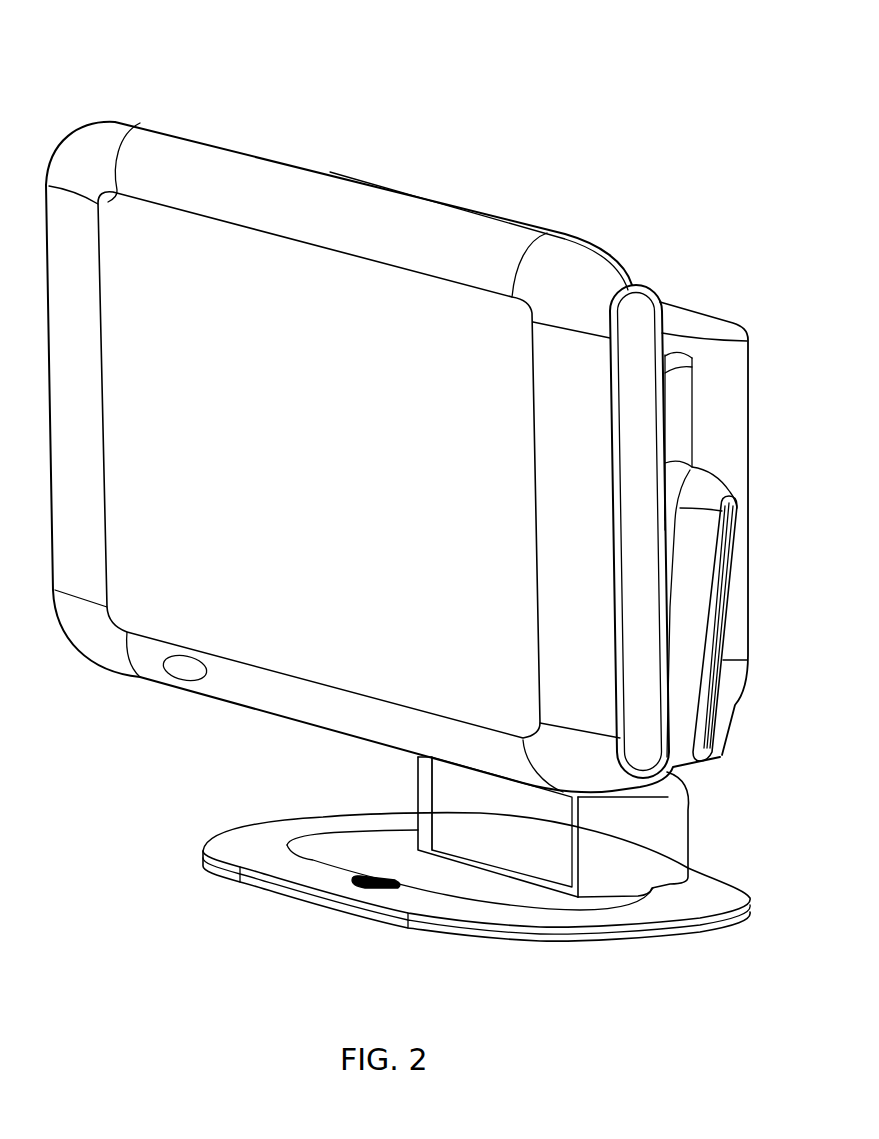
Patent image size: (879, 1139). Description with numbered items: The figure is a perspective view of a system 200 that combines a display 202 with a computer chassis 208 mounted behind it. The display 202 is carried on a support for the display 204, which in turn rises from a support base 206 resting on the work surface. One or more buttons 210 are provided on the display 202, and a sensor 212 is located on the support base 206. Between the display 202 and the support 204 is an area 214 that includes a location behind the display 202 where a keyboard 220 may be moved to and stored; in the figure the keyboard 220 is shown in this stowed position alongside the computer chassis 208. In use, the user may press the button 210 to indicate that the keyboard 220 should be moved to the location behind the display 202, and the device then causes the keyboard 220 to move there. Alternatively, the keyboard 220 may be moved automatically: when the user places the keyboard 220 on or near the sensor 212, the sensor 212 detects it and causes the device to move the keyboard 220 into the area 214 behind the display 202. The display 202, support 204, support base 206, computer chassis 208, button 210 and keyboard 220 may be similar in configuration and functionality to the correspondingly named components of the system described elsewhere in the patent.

The system 200 is at (92, 62).
The display 202 is at (243, 146).
The support for the display 204 is at (688, 823).
The support base 206 is at (748, 895).
The computer chassis 208 is at (727, 322).
The button 210 is at (178, 681).
The sensor 212 is at (357, 882).
The area between the display and the support 214 is at (679, 433).
The keyboard 220 is at (720, 758).